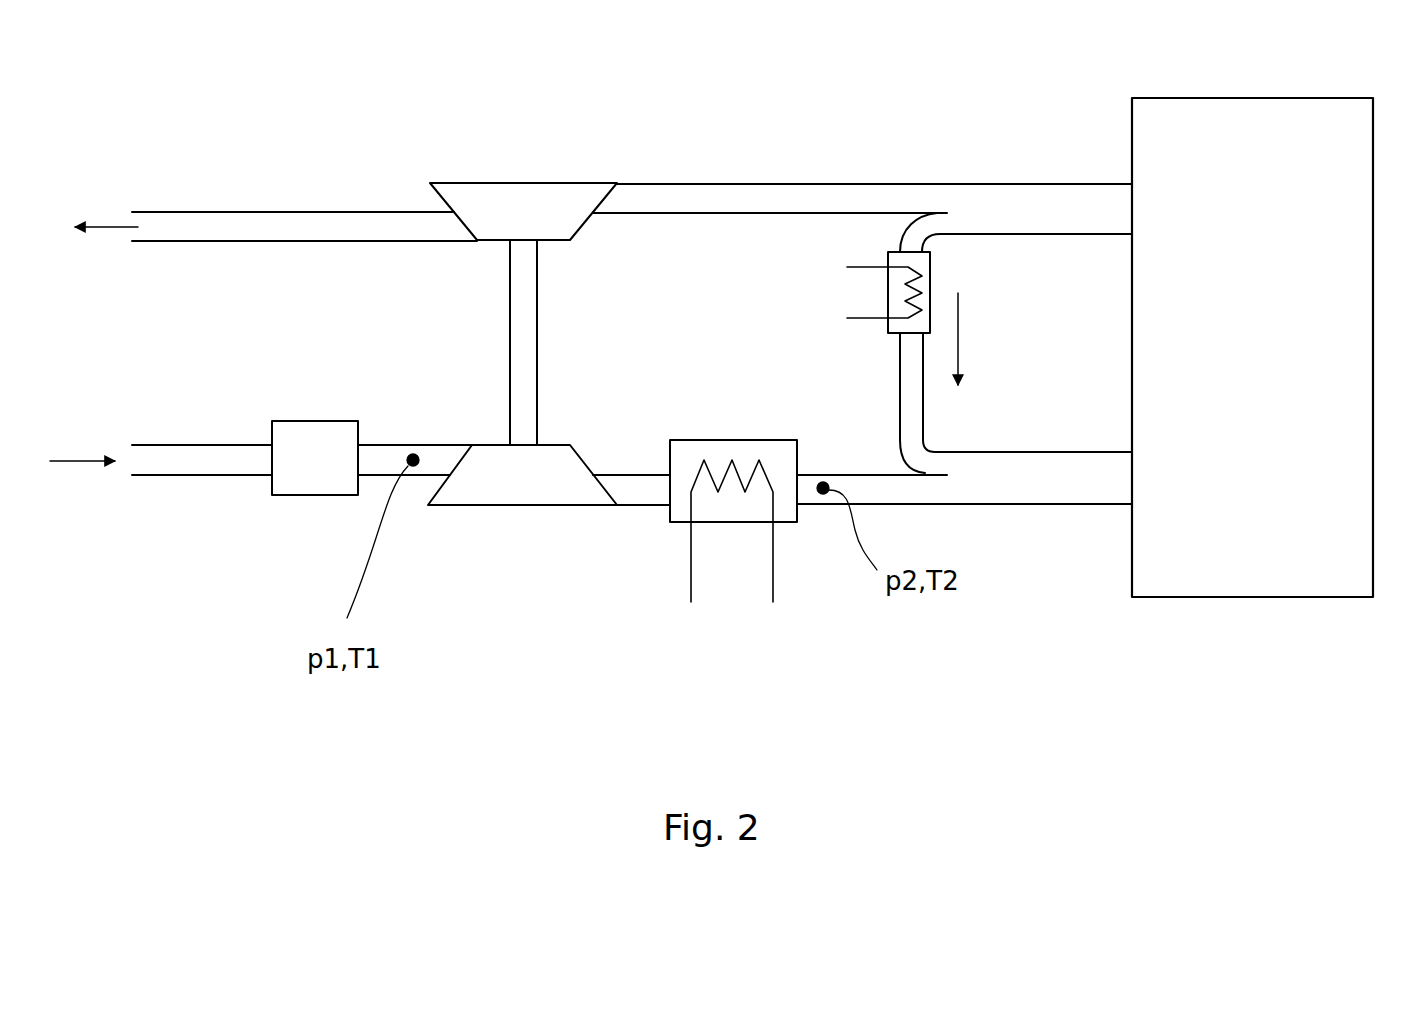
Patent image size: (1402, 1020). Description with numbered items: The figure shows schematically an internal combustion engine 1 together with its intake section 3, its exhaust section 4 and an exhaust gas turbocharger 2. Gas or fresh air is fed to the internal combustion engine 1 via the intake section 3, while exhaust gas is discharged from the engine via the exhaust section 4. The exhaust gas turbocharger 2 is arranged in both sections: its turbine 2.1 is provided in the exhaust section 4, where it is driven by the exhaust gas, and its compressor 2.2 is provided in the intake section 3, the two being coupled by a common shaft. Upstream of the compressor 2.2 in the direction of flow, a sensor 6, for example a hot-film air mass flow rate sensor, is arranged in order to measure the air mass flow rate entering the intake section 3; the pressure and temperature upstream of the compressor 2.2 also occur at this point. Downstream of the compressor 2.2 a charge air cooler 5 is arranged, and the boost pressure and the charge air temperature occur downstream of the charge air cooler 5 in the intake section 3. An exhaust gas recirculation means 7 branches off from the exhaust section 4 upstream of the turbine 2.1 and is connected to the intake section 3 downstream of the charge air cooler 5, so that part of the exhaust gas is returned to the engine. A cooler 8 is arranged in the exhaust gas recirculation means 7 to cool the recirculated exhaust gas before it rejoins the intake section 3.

The internal combustion engine 1 is at (1264, 366).
The exhaust gas turbocharger 2 is at (472, 344).
The turbine 2.1 is at (545, 235).
The compressor 2.2 is at (545, 499).
The intake section 3 is at (583, 590).
The exhaust section 4 is at (797, 132).
The charge air cooler 5 is at (733, 522).
The sensor 6 is at (297, 495).
The exhaust gas recirculation means 7 is at (797, 328).
The cooler 8 is at (887, 293).